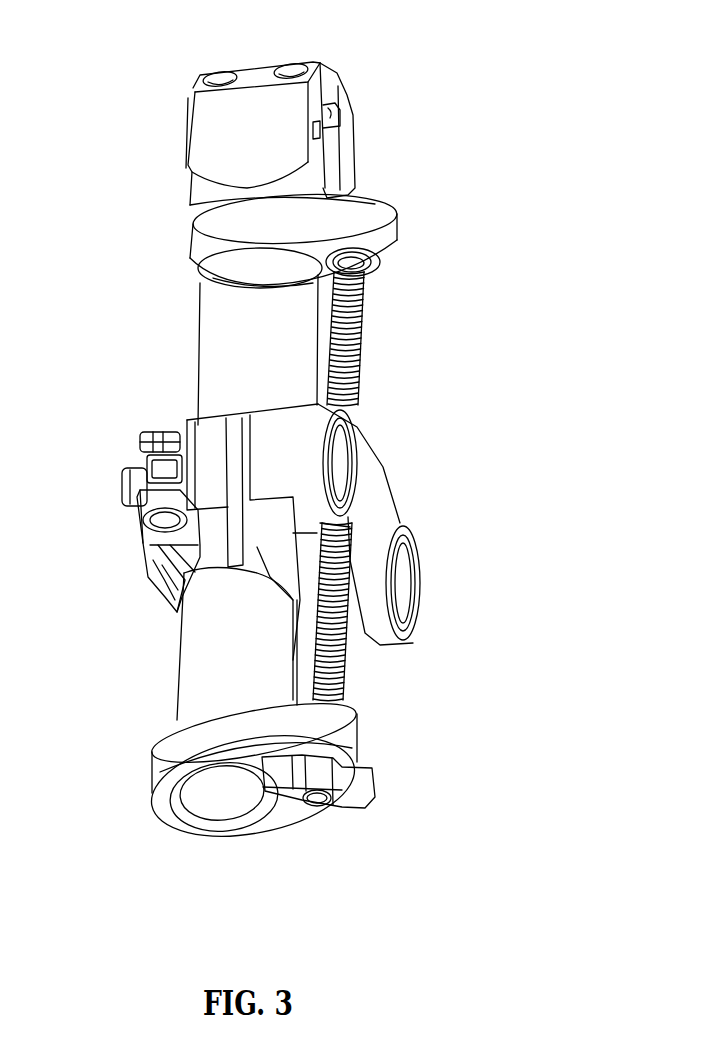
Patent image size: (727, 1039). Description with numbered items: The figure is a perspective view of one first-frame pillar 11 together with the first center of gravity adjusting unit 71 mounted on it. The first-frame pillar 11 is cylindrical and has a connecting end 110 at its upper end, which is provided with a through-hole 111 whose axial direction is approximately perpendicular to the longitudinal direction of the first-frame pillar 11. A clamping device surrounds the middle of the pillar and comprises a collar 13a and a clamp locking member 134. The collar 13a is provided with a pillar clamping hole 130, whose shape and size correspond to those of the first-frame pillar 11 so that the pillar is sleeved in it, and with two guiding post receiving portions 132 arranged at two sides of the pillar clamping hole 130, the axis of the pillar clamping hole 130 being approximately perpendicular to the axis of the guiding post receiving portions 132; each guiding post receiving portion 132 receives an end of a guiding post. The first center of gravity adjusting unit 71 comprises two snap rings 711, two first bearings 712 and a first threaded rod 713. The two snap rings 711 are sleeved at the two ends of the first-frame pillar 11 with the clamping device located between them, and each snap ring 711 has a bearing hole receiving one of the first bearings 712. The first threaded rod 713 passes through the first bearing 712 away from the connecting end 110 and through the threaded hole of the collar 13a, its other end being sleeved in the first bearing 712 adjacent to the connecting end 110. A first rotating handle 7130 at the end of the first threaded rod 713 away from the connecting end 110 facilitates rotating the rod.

The connecting end 110 is at (230, 138).
The through-hole 111 is at (332, 152).
The first center of gravity adjusting unit 71 is at (386, 445).
The snap ring 711 is at (370, 220).
The first bearing 712 is at (375, 270).
The first threaded rod 713 is at (380, 305).
The first rotating handle 7130 is at (350, 783).
The first-frame pillar 11 is at (230, 647).
The collar 13a is at (213, 460).
The guiding post receiving portion 132 is at (337, 470).
The clamp locking member 134 is at (148, 540).
The pillar clamping hole 130 is at (167, 605).